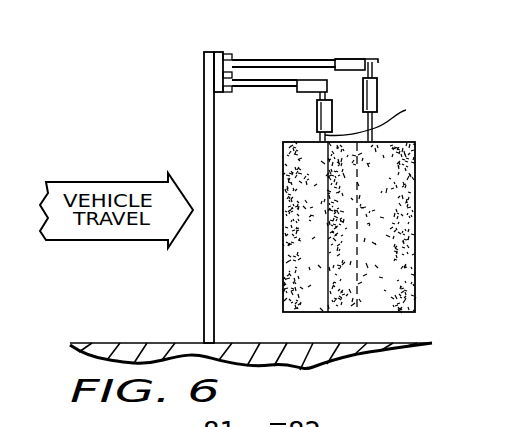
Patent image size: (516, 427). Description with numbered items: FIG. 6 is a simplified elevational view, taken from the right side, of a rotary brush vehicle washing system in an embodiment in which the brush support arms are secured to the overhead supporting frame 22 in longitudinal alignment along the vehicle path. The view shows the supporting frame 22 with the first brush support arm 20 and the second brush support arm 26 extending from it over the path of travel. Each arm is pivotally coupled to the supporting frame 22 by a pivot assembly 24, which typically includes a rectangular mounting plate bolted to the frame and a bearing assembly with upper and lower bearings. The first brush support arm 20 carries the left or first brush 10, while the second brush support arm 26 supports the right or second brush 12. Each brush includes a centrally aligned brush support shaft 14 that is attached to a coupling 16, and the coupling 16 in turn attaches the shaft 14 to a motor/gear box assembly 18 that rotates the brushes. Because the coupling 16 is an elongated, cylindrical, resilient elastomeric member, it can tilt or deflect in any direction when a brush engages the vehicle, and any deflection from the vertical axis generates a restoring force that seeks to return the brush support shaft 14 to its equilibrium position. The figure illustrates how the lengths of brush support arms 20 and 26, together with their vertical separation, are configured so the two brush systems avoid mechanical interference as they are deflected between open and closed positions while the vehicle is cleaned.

The first brush 10 is at (348, 227).
The second brush 12 is at (283, 199).
The brush support shaft 14 is at (377, 117).
The coupling 16 is at (377, 98).
The motor/gear box assembly 18 is at (338, 59).
The first brush support arm 20 is at (283, 59).
The supporting frame 22 is at (206, 60).
The pivot assembly 24 is at (227, 52).
The second brush support arm 26 is at (268, 87).